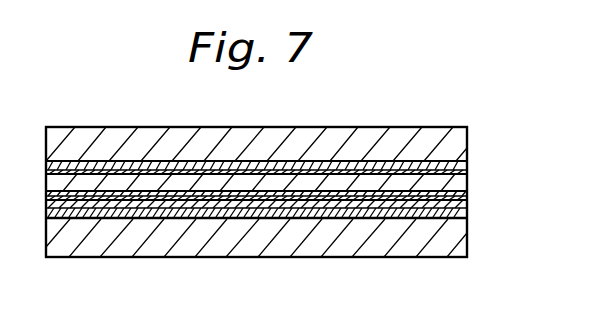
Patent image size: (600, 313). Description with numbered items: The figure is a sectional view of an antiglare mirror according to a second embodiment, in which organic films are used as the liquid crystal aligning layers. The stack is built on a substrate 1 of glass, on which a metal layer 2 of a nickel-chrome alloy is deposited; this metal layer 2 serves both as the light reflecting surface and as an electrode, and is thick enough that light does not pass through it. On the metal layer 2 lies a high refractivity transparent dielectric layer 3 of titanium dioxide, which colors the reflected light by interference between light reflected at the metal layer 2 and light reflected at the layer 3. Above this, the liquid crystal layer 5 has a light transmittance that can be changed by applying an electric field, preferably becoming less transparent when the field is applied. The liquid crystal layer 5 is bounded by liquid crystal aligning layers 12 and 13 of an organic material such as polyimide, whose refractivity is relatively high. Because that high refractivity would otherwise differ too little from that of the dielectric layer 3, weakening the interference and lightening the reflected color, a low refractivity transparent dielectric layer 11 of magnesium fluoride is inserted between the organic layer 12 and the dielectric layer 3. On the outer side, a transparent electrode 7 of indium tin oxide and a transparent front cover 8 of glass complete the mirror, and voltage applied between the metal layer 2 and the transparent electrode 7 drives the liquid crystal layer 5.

The substrate 1 is at (427, 255).
The metal layer 2 is at (468, 256).
The high refractivity transparent dielectric layer 3 is at (466, 252).
The liquid crystal layer 5 is at (468, 189).
The transparent electrode 7 is at (468, 162).
The transparent front cover 8 is at (468, 130).
The low refractivity transparent dielectric layer 11 is at (468, 208).
The liquid crystal aligning layer 12 is at (468, 204).
The liquid crystal aligning layer 13 is at (468, 176).